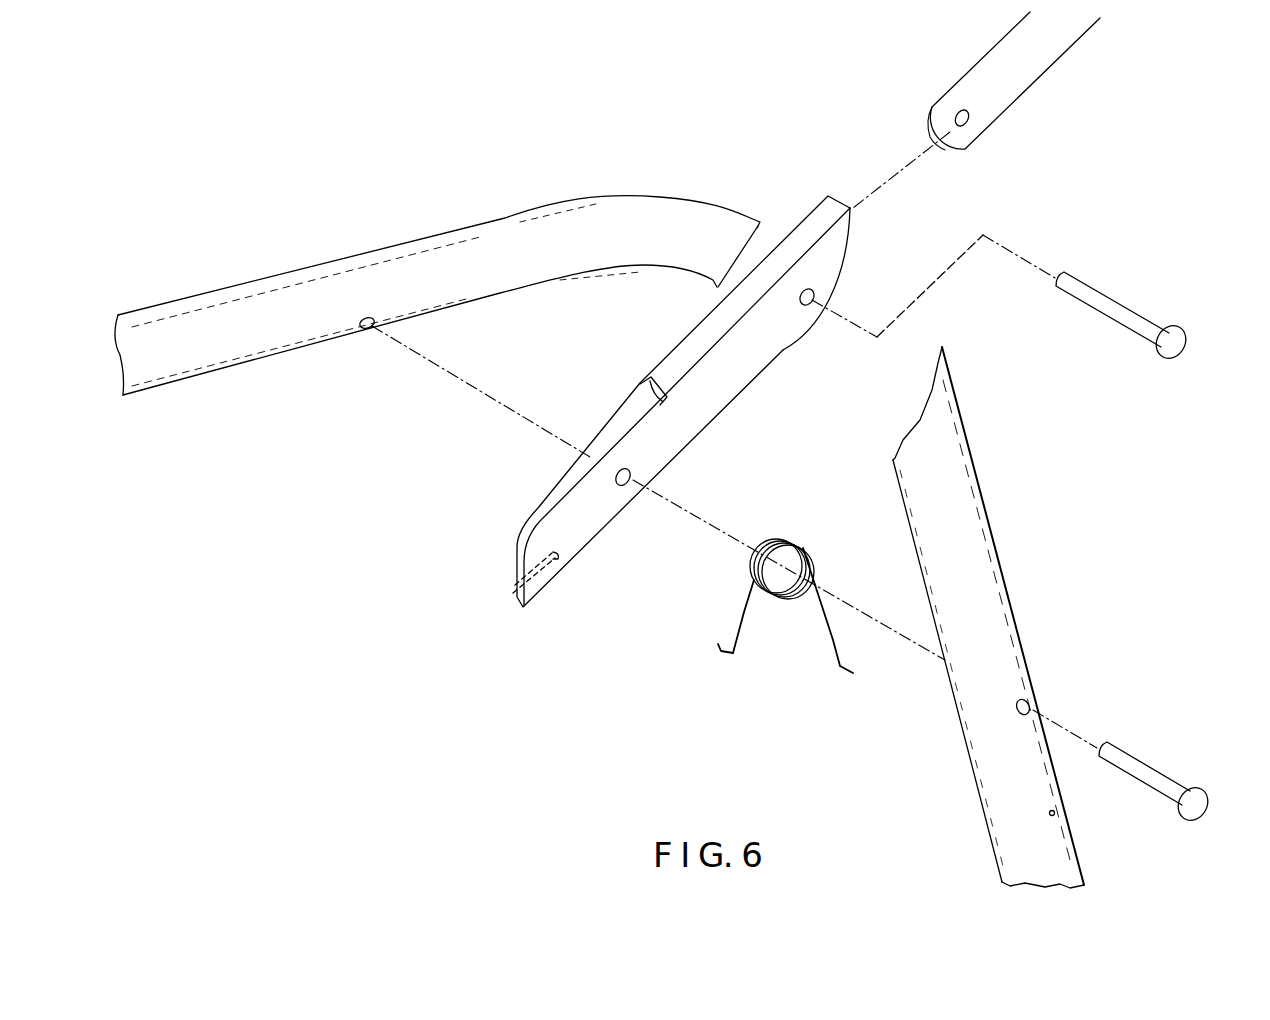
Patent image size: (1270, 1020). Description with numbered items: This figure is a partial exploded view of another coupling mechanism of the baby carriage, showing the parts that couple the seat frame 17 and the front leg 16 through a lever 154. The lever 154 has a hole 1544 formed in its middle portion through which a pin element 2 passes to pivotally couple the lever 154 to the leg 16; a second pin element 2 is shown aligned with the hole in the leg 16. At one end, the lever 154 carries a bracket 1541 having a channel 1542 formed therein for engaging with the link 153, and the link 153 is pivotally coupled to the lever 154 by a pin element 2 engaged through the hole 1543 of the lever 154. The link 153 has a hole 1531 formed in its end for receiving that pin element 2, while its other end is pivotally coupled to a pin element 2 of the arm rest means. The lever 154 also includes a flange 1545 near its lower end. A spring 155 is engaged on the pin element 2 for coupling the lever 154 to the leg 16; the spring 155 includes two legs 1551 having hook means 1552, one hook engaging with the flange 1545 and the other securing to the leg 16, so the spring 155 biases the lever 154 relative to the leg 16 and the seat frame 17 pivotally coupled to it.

The pin element 2 is at (1118, 308).
The front leg 16 is at (983, 520).
The seat frame 17 is at (258, 305).
The link 153 is at (1048, 48).
The hole 1531 is at (968, 121).
The lever 154 is at (722, 392).
The bracket 1541 is at (812, 227).
The channel 1542 is at (640, 400).
The hole 1543 is at (809, 300).
The hole 1544 is at (622, 490).
The flange 1545 is at (510, 598).
The spring 155 is at (797, 541).
The legs 1551 is at (745, 614).
The hook means 1552 is at (720, 650).